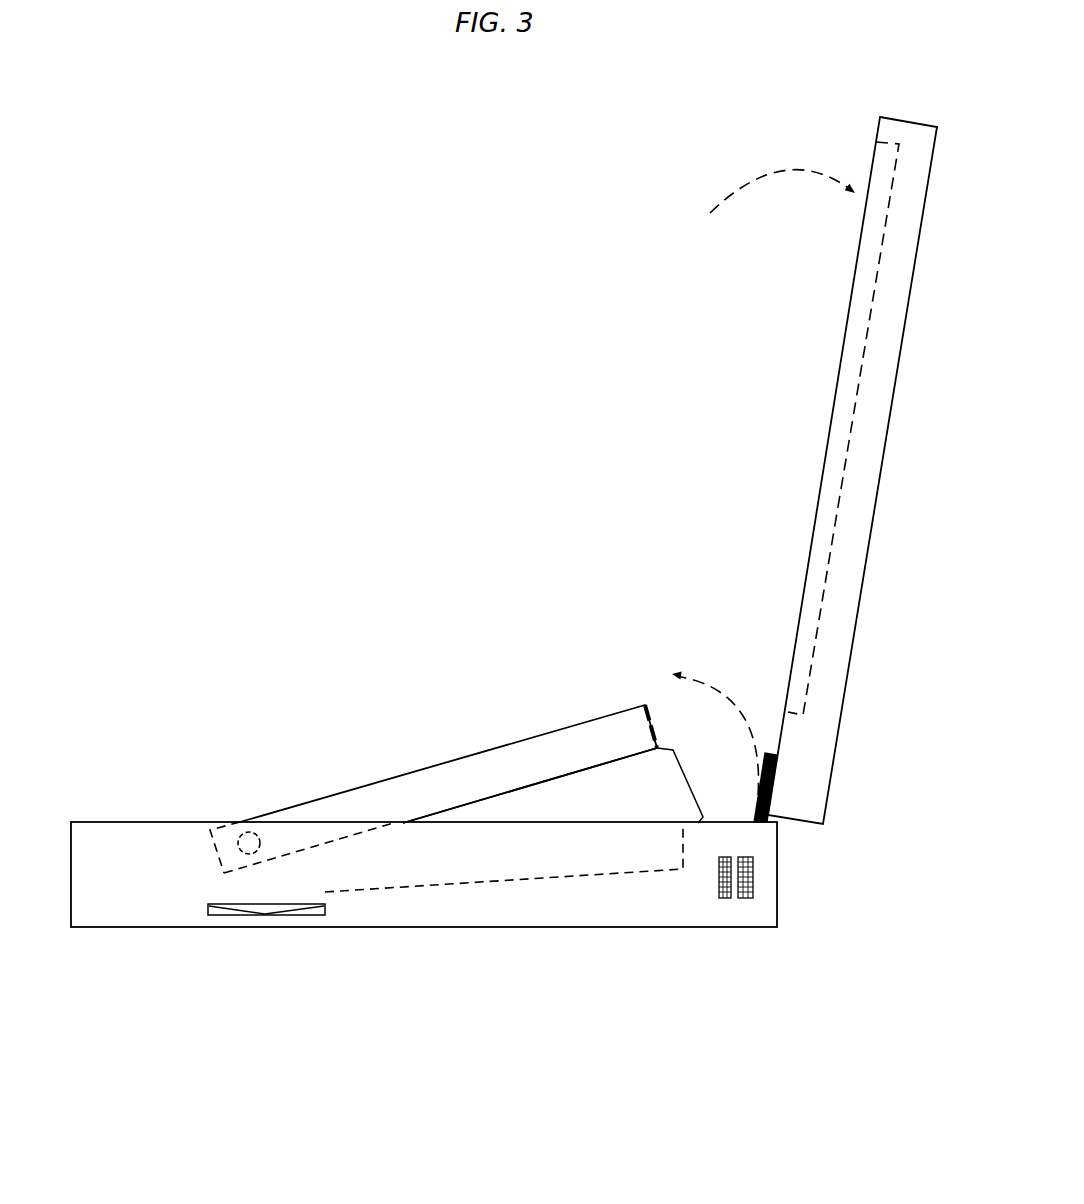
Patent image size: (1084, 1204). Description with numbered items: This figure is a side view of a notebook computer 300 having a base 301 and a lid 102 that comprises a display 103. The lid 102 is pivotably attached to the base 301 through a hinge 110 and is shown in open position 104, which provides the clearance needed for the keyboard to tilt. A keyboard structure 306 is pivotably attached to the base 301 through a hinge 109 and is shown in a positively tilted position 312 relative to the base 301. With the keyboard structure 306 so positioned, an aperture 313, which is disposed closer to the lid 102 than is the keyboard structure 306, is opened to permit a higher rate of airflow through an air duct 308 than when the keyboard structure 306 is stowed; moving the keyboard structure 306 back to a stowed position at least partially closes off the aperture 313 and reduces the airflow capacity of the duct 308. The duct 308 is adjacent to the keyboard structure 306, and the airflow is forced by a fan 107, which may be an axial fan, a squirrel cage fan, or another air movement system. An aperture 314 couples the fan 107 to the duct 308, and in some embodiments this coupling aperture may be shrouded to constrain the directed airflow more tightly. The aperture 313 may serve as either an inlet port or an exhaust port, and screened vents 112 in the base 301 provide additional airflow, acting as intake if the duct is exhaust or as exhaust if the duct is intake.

The notebook computer 300 is at (254, 172).
The lid 102 is at (872, 125).
The display 103 is at (813, 585).
The open position 104 is at (765, 191).
The base 301 is at (123, 915).
The fan 107 is at (227, 915).
The hinge 109 is at (248, 855).
The aperture 314 is at (289, 886).
The keyboard structure 306 is at (593, 732).
The air duct 308 is at (524, 812).
The aperture 313 is at (694, 786).
The positively tilted position 312 is at (715, 733).
The hinge 110 is at (763, 821).
The screened vents 112 is at (722, 898).